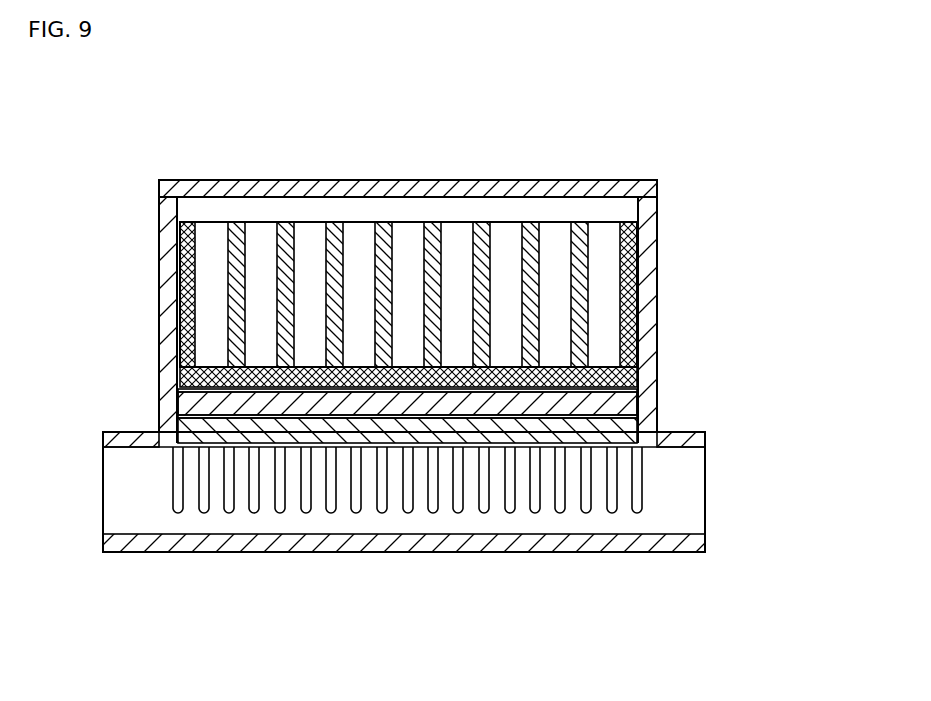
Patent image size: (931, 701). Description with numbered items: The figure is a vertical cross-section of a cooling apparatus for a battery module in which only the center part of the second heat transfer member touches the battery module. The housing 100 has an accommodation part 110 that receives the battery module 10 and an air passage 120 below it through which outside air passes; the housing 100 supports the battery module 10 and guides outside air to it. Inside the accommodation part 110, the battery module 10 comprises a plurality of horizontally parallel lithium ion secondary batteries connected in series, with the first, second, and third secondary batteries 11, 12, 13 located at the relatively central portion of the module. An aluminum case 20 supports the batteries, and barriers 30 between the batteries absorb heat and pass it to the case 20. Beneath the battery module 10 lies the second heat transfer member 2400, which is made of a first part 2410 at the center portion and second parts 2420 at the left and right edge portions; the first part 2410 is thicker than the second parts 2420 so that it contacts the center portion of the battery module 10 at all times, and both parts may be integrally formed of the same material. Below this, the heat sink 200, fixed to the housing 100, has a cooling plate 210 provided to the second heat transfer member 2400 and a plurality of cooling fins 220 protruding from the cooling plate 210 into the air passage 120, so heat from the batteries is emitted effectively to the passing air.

The housing 100 is at (614, 178).
The accommodation part 110 is at (655, 287).
The air passage 120 is at (688, 495).
The battery module 10 is at (505, 215).
The first secondary battery 11 is at (408, 222).
The second secondary battery 12 is at (358, 222).
The third secondary battery 13 is at (453, 222).
The case 20 is at (177, 380).
The barriers 30 is at (275, 323).
The heat sink 200 is at (318, 456).
The cooling plate 210 is at (373, 433).
The cooling fins 220 is at (436, 488).
The second heat transfer member 2400 is at (174, 402).
The first part 2410 is at (443, 410).
The second parts 2420 is at (633, 410).